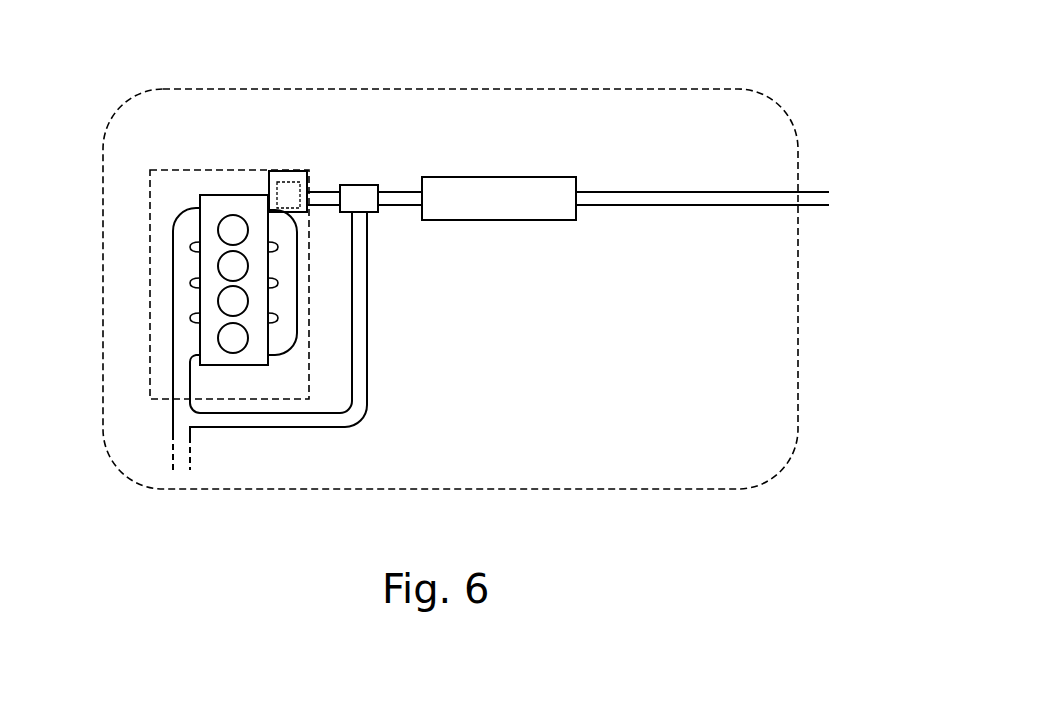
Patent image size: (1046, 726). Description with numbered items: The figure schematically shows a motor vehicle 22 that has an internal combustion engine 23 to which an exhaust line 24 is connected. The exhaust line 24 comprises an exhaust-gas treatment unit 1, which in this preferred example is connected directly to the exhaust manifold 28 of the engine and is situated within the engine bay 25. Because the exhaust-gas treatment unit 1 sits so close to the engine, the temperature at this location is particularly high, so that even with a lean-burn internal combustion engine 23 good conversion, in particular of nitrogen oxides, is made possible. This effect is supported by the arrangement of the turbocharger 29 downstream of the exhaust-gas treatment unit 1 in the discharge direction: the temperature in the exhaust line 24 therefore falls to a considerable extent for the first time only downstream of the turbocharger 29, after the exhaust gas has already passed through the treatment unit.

The exhaust-gas treatment unit 1 is at (283, 171).
The motor vehicle 22 is at (531, 89).
The internal combustion engine 23 is at (213, 195).
The exhaust line 24 is at (470, 162).
The engine bay 25 is at (255, 400).
The exhaust manifold 28 is at (297, 335).
The turbocharger 29 is at (358, 185).